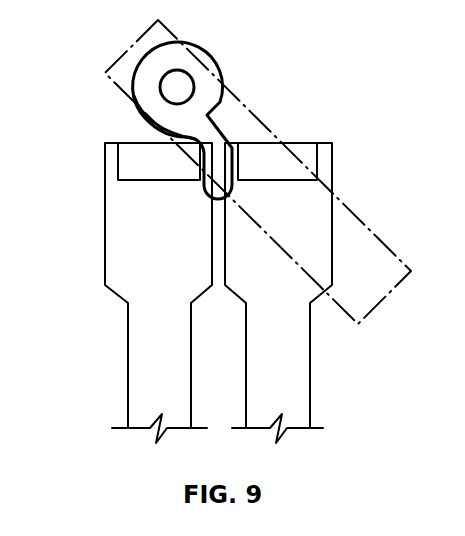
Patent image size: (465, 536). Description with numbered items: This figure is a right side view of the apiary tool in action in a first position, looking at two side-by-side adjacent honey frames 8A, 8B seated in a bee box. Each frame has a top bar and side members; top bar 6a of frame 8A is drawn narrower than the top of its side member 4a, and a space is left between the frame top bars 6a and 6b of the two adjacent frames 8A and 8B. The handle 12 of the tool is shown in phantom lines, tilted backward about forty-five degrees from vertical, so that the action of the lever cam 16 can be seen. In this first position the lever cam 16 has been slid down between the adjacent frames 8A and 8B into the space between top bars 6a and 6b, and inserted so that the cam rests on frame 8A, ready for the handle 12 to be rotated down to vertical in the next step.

The lever cam 16 is at (218, 70).
The handle 12 is at (363, 221).
The side member 4a is at (104, 250).
The top bar 6a is at (130, 143).
The top bar 6b is at (305, 143).
The honey frame 8A is at (116, 342).
The honey frame 8B is at (326, 394).